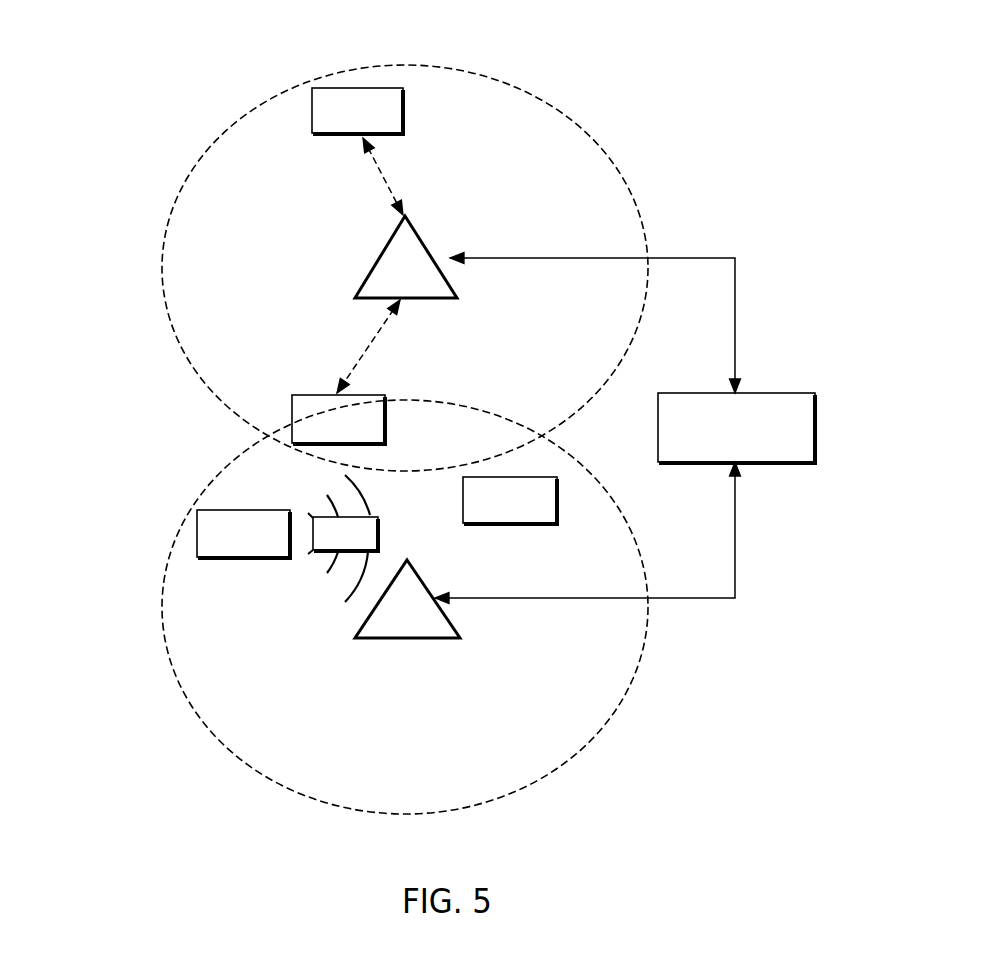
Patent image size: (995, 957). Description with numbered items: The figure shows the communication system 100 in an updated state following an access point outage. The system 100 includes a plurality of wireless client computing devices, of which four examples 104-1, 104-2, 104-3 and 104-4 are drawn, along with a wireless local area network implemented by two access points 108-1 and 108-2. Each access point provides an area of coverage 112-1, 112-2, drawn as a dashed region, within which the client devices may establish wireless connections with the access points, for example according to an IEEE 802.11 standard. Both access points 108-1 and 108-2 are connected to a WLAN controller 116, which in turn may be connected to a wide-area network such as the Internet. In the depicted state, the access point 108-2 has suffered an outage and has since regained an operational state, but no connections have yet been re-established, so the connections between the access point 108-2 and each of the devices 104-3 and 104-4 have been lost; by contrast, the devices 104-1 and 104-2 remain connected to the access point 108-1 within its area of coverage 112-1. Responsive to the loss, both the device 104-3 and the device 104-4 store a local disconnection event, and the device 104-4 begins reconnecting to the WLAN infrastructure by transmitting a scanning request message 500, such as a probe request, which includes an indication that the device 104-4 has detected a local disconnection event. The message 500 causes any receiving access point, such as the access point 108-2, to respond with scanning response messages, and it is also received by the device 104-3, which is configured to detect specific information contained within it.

The communication system 100 is at (108, 53).
The wireless client computing device 104-1 is at (403, 115).
The wireless client computing device 104-2 is at (385, 420).
The wireless client computing device 104-3 is at (516, 524).
The wireless client computing device 104-4 is at (247, 558).
The access point 108-1 is at (381, 262).
The access point 108-2 is at (407, 638).
The area of coverage 112-1 is at (163, 268).
The area of coverage 112-2 is at (163, 607).
The WLAN controller 116 is at (815, 433).
The scanning request message 500 is at (378, 533).